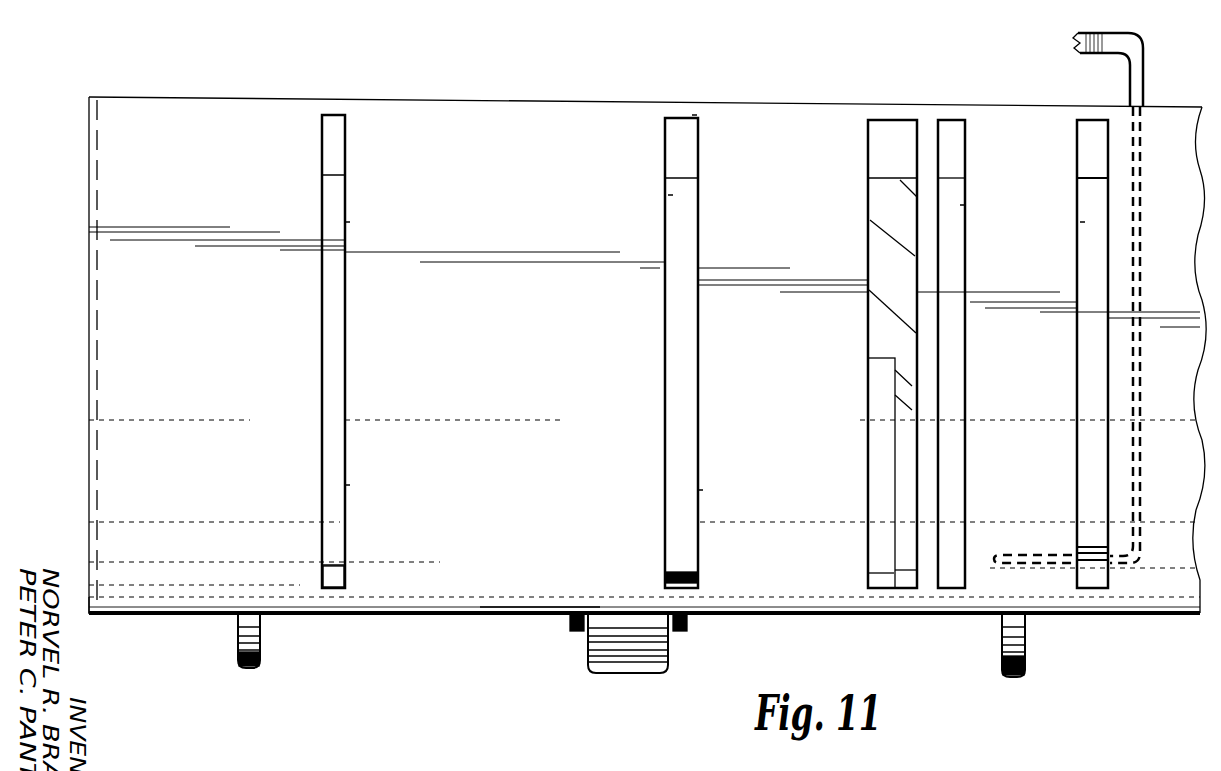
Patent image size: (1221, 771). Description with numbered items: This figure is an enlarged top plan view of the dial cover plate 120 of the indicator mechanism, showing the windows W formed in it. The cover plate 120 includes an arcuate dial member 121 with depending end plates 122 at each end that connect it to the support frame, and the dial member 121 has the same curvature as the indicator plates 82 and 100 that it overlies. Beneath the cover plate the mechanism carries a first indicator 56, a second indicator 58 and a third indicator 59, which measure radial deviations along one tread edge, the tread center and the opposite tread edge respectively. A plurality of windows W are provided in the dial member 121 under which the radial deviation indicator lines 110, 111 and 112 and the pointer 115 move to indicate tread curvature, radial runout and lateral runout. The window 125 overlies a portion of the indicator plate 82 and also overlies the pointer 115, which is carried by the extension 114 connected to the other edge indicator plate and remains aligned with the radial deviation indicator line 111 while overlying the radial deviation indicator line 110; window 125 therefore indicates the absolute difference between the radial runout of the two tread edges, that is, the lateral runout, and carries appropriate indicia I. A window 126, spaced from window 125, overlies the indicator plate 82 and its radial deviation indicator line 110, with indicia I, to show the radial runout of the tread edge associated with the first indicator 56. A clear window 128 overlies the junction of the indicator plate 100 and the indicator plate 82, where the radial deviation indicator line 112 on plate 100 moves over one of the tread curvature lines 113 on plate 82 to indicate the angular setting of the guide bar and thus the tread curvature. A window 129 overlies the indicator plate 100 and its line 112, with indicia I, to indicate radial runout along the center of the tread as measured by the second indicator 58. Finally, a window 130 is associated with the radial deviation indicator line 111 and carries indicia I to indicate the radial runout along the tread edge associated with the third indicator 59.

The arcuate dial member 121 is at (845, 107).
The window 130 is at (345, 160).
The radial deviation indicator line 111 is at (345, 561).
The window 129 is at (697, 152).
The window 128 is at (870, 218).
The indicator plate 82 is at (877, 260).
The tread curvature lines 113 is at (882, 296).
The indicator plate 100 is at (877, 408).
The radial deviation indicator line 110 is at (907, 572).
The radial deviation indicator line 112 is at (878, 573).
The window 126 is at (958, 180).
The window 125 is at (1077, 150).
The extension 114 is at (1156, 44).
The pointer 115 is at (1040, 565).
The third indicator 59 is at (262, 660).
The first indicator 56 is at (1000, 660).
The second indicator 58 is at (586, 660).
The dial cover plate 120 is at (482, 617).
The depending end plates 122 is at (100, 616).
The indicia I is at (346, 222).
The windows W is at (694, 113).